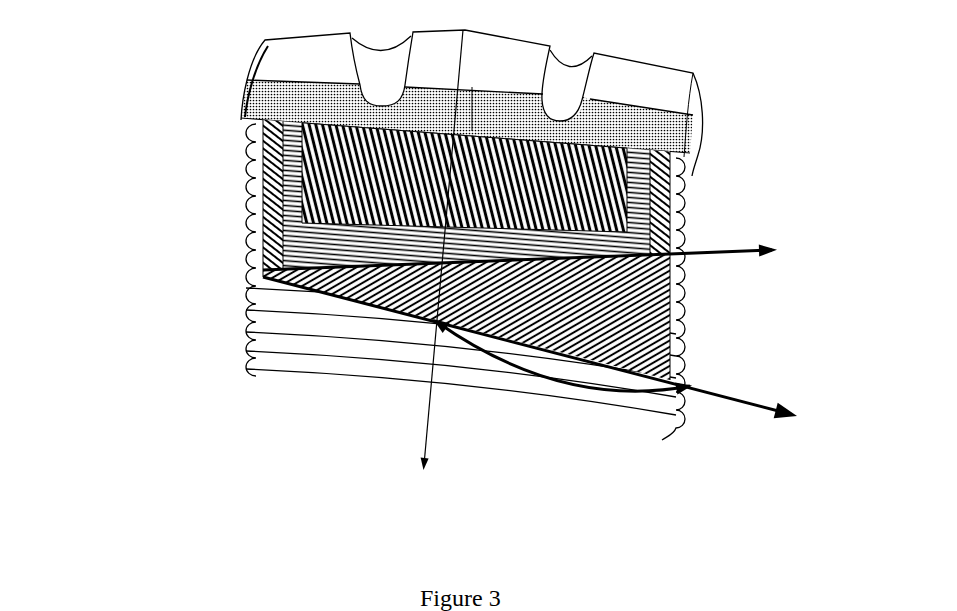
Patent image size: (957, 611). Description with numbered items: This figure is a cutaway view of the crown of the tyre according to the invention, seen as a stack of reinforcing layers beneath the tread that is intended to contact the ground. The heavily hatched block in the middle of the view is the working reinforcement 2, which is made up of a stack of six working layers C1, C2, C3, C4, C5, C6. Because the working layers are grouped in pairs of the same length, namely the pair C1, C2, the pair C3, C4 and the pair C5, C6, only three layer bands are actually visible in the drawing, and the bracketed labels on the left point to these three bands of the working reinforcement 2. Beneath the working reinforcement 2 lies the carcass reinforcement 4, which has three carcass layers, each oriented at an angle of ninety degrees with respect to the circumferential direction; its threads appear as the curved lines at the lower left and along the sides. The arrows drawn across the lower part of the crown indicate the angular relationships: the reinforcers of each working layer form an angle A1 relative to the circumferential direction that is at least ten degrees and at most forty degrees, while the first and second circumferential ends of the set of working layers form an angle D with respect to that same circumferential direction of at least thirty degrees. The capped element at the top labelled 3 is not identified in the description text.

The working reinforcement 2 is at (417, 269).
The head cap 3 is at (658, 89).
The carcass reinforcement 4 is at (232, 292).
The working layer C1 is at (384, 195).
The working layer C2 is at (258, 206).
The working layer C3 is at (374, 195).
The working layer C4 is at (271, 188).
The working layer C5 is at (362, 177).
The working layer C6 is at (300, 166).
The angle of the reinforcers of a working layer A1 is at (556, 250).
The angle of the circumferential ends of the set of working layers D is at (556, 250).